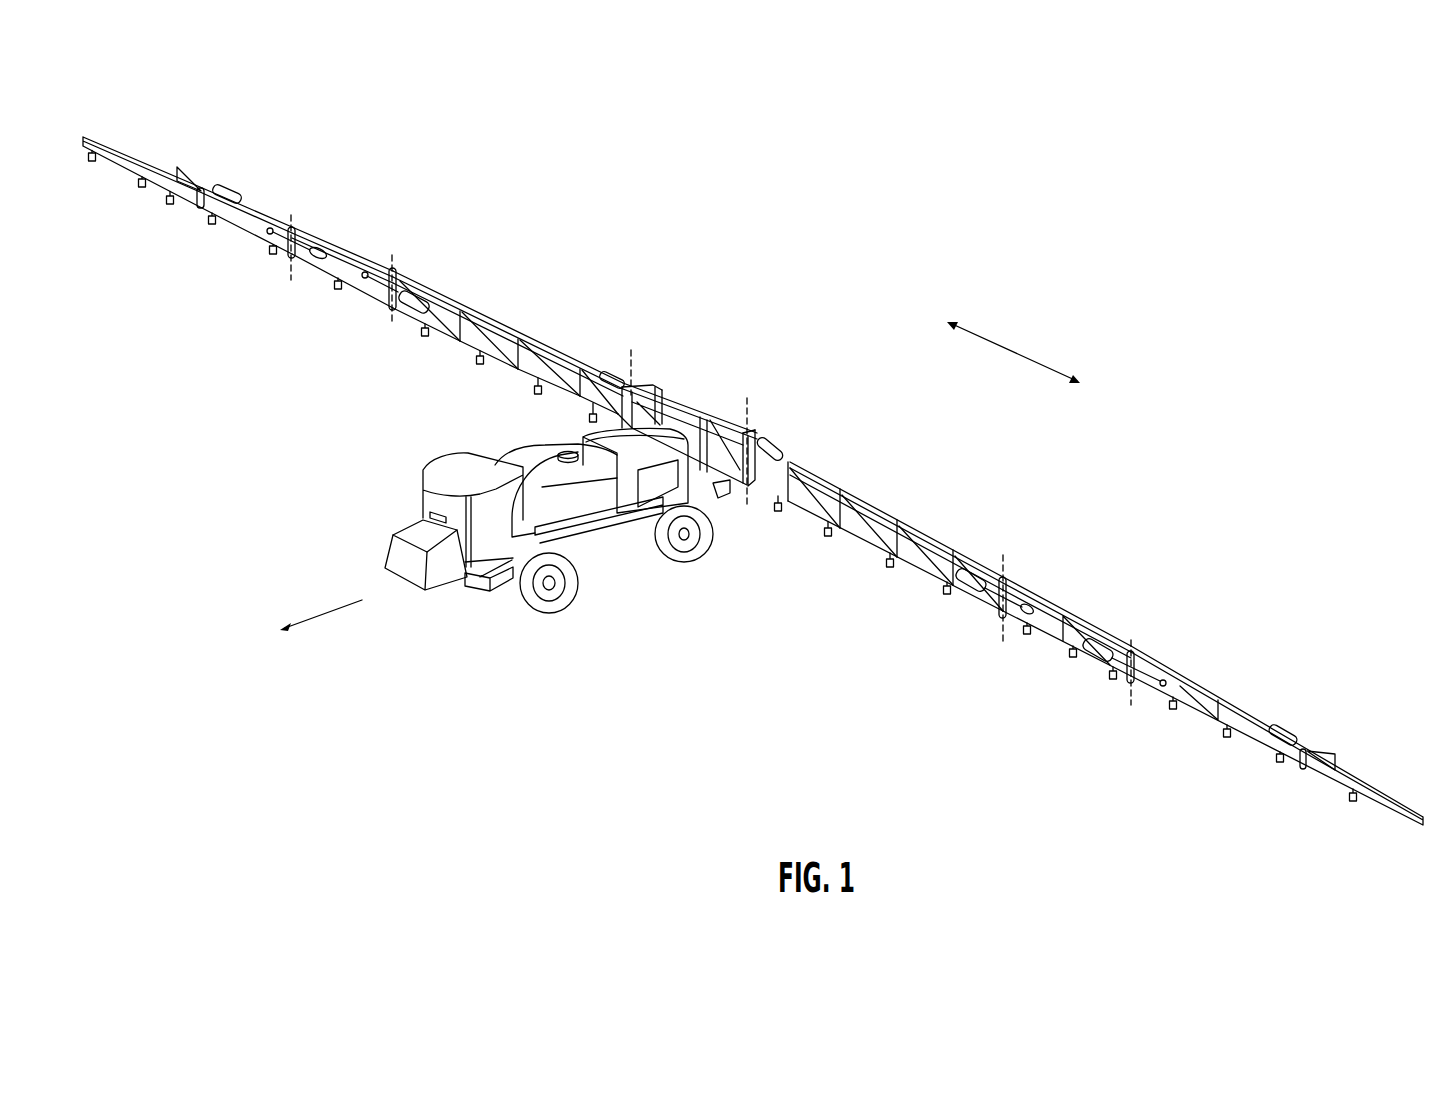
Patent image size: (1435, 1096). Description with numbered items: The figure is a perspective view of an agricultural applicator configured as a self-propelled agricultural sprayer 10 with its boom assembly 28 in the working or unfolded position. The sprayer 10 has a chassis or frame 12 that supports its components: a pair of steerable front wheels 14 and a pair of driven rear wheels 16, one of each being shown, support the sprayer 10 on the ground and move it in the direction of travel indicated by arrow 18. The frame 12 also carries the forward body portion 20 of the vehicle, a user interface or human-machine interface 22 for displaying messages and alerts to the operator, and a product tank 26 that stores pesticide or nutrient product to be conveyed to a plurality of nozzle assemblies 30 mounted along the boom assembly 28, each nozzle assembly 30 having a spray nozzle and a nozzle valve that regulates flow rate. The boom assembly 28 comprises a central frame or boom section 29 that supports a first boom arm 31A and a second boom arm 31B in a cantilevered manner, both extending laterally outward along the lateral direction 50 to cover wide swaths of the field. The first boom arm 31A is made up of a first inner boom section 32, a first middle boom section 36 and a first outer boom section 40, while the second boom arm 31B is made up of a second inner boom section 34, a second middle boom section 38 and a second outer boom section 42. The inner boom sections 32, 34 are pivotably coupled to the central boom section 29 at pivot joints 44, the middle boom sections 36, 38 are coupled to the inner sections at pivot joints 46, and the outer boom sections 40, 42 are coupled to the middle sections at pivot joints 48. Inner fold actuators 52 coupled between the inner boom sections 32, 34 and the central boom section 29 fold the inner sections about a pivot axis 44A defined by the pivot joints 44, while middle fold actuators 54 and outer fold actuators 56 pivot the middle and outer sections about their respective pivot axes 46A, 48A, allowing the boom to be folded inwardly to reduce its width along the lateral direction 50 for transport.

The agricultural sprayer 10 is at (828, 168).
The frame 12 is at (587, 553).
The front wheels 14 is at (545, 613).
The rear wheels 16 is at (690, 558).
The direction of travel 18 is at (323, 613).
The hood 20 is at (445, 473).
The human-machine interface 22 is at (430, 507).
The product tank 26 is at (543, 460).
The boom assembly 28 is at (762, 315).
The central boom section 29 is at (702, 443).
The nozzle assemblies 30 is at (142, 190).
The first boom arm 31A is at (1431, 730).
The second boom arm 31B is at (680, 330).
The first inner boom section 32 is at (877, 505).
The second inner boom section 34 is at (487, 313).
The first middle boom section 36 is at (1090, 628).
The second middle boom section 38 is at (330, 240).
The first outer boom section 40 is at (1210, 702).
The second outer boom section 42 is at (291, 222).
The pivot joints 44 is at (660, 397).
The pivot axis 44A is at (631, 377).
The pivot joints 46 is at (394, 268).
The pivot axis 46A is at (391, 313).
The pivot joints 48 is at (295, 228).
The pivot axis 48A is at (273, 262).
The lateral direction 50 is at (1012, 345).
The inner fold actuators 52 is at (623, 382).
The middle fold actuators 54 is at (408, 305).
The outer fold actuators 56 is at (313, 256).